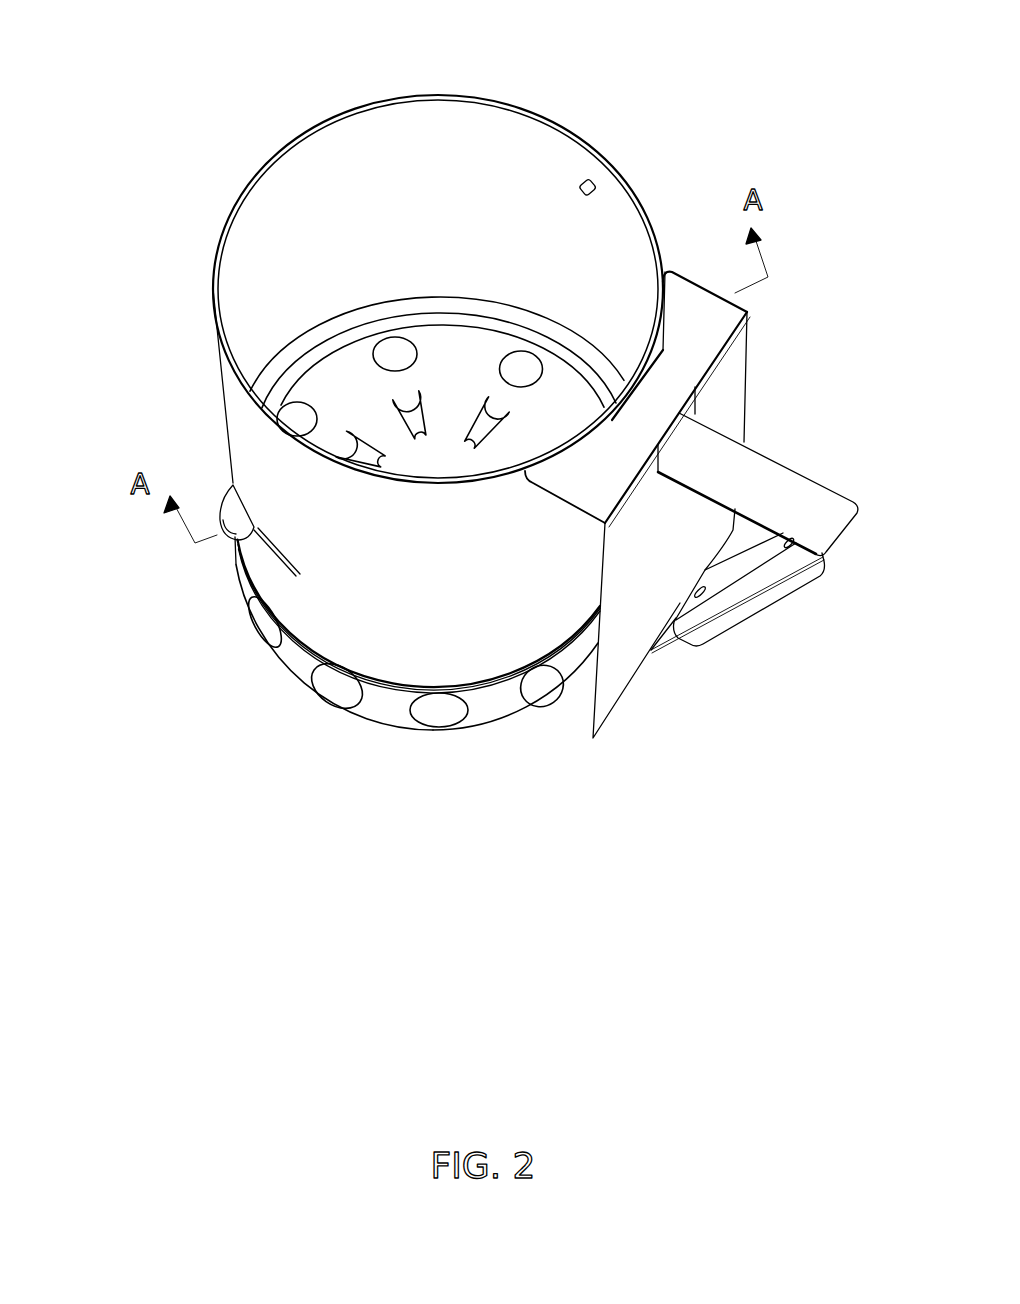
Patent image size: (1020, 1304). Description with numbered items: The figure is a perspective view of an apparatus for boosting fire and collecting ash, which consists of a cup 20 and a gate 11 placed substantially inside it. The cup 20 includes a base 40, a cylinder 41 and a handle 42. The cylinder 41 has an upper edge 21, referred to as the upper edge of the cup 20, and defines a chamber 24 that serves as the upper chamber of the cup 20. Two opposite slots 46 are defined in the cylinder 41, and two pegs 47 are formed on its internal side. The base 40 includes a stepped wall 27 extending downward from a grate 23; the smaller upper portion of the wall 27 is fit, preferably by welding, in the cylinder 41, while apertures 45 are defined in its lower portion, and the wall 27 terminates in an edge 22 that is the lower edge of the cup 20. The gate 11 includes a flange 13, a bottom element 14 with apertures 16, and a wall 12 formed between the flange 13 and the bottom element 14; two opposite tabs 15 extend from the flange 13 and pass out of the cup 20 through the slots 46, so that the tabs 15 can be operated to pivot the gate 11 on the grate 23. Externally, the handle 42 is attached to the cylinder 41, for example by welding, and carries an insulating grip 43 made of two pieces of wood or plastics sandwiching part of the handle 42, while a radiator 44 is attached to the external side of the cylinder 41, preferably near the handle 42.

The gate 11 is at (160, 113).
The wall 12 is at (322, 345).
The flange 13 is at (283, 362).
The bottom element 14 is at (353, 362).
The tabs 15 is at (233, 510).
The apertures 16 is at (550, 380).
The cup 20 is at (160, 660).
The upper edge 21 is at (495, 104).
The edge 22 is at (420, 733).
The grate 23 is at (511, 368).
The chamber 24 is at (433, 118).
The wall 27 is at (487, 698).
The base 40 is at (288, 652).
The cylinder 41 is at (337, 605).
The handle 42 is at (810, 495).
The insulating grip 43 is at (770, 595).
The radiator 44 is at (738, 366).
The apertures 45 is at (347, 688).
The slots 46 is at (263, 556).
The pegs 47 is at (593, 178).